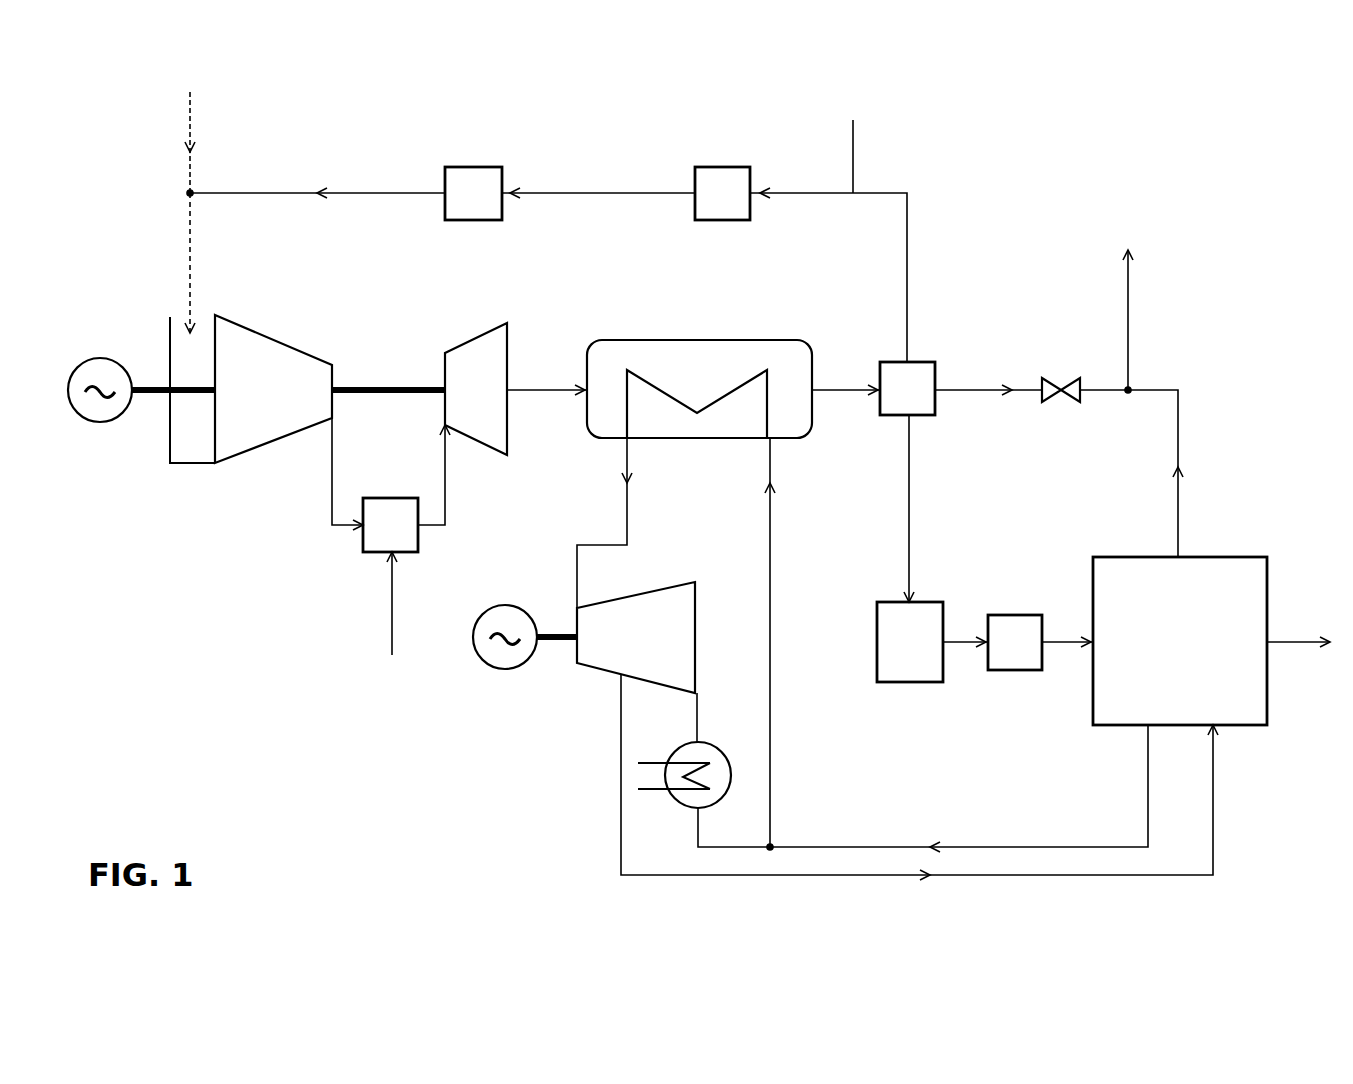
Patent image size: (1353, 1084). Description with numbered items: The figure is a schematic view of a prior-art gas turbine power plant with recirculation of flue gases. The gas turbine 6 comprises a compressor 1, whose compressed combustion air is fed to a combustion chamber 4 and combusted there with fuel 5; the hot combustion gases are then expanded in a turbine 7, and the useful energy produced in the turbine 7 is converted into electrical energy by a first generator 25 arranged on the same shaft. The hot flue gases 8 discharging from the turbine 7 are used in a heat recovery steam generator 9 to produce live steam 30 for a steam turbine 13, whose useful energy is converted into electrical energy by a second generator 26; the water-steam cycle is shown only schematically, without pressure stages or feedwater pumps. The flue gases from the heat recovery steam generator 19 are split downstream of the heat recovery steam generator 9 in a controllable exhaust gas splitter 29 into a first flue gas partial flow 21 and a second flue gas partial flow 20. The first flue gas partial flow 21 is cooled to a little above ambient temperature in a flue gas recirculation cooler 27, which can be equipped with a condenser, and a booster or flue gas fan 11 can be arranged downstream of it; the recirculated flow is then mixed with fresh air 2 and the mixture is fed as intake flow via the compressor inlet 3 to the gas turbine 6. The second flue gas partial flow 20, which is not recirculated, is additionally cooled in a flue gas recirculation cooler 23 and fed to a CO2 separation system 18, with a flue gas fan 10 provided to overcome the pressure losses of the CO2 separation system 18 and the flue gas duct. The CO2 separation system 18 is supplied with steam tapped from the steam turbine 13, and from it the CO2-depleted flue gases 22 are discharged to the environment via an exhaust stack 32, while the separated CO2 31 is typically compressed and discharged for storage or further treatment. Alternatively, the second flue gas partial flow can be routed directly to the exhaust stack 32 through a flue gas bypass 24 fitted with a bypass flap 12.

The compressor 1 is at (259, 403).
The fresh air 2 is at (188, 118).
The compressor inlet 3 is at (193, 433).
The combustion chamber 4 is at (381, 538).
The fuel 5 is at (392, 622).
The gas turbine 6 is at (378, 348).
The turbine 7 is at (466, 403).
The hot flue gases 8 is at (540, 390).
The heat recovery steam generator 9 is at (688, 380).
The flue gas fan 10 is at (1001, 656).
The booster or flue gas fan 11 is at (459, 209).
The bypass flap 12 is at (1060, 385).
The steam turbine 13 is at (623, 653).
The CO2 separation system 18 is at (1166, 656).
The flue gases from the heat recovery steam generator 19 is at (840, 390).
The second flue gas partial flow 20 is at (909, 512).
The first flue gas partial flow 21 is at (853, 137).
The CO2-depleted flue gases 22 is at (1152, 390).
The flue gas recirculation cooler 23 is at (896, 656).
The flue gas bypass 24 is at (980, 390).
The first generator 25 is at (100, 422).
The second generator 26 is at (505, 669).
The flue gas recirculation cooler 27 is at (708, 209).
The exhaust gas splitter 29 is at (893, 404).
The live steam 30 is at (627, 507).
The CO2 31 is at (1298, 642).
The exhaust stack 32 is at (1128, 298).